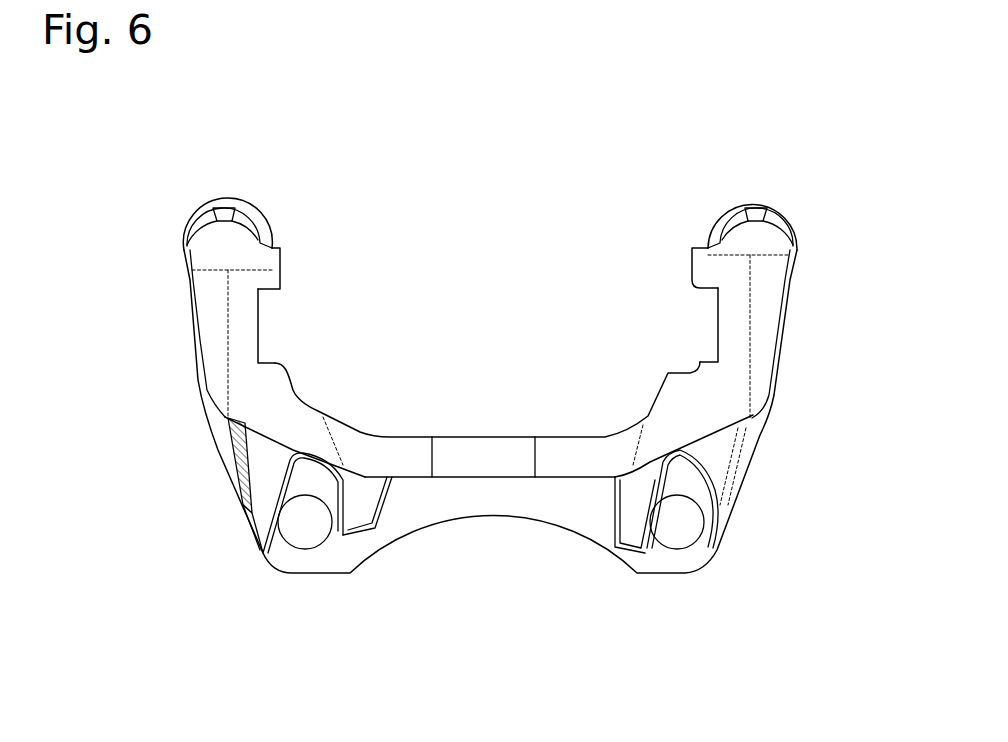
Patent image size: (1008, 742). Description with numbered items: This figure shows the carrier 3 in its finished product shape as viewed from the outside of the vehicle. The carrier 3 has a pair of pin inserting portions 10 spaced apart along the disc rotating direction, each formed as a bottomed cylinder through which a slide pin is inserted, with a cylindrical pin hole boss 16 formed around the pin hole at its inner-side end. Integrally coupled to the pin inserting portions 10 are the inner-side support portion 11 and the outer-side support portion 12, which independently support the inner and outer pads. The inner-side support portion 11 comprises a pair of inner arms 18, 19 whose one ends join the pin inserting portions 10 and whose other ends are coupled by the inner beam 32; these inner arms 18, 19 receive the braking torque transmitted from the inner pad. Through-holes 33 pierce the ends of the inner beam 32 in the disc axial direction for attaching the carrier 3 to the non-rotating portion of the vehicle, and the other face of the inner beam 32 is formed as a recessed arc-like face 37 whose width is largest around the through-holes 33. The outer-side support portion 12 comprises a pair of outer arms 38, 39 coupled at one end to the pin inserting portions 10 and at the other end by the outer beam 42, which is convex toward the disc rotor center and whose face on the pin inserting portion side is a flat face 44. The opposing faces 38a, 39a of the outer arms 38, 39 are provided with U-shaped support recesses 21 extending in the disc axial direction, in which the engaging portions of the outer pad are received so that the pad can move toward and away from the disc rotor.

The carrier 3 is at (812, 192).
The pin inserting portion 10 is at (203, 207).
The inner-side support portion 11 is at (547, 546).
The outer-side support portion 12 is at (505, 416).
The pin hole boss 16 is at (225, 193).
The inner arm 18 is at (200, 376).
The inner arm 19 is at (765, 407).
The support recess 21 is at (259, 323).
The inner beam 32 is at (492, 498).
The through-hole 33 is at (305, 537).
The recessed arc-like face 37 is at (437, 523).
The outer arm 38 is at (212, 307).
The opposing face 38a is at (283, 275).
The outer arm 39 is at (767, 308).
The opposing face 39a is at (688, 271).
The outer beam 42 is at (582, 444).
The flat face 44 is at (465, 436).